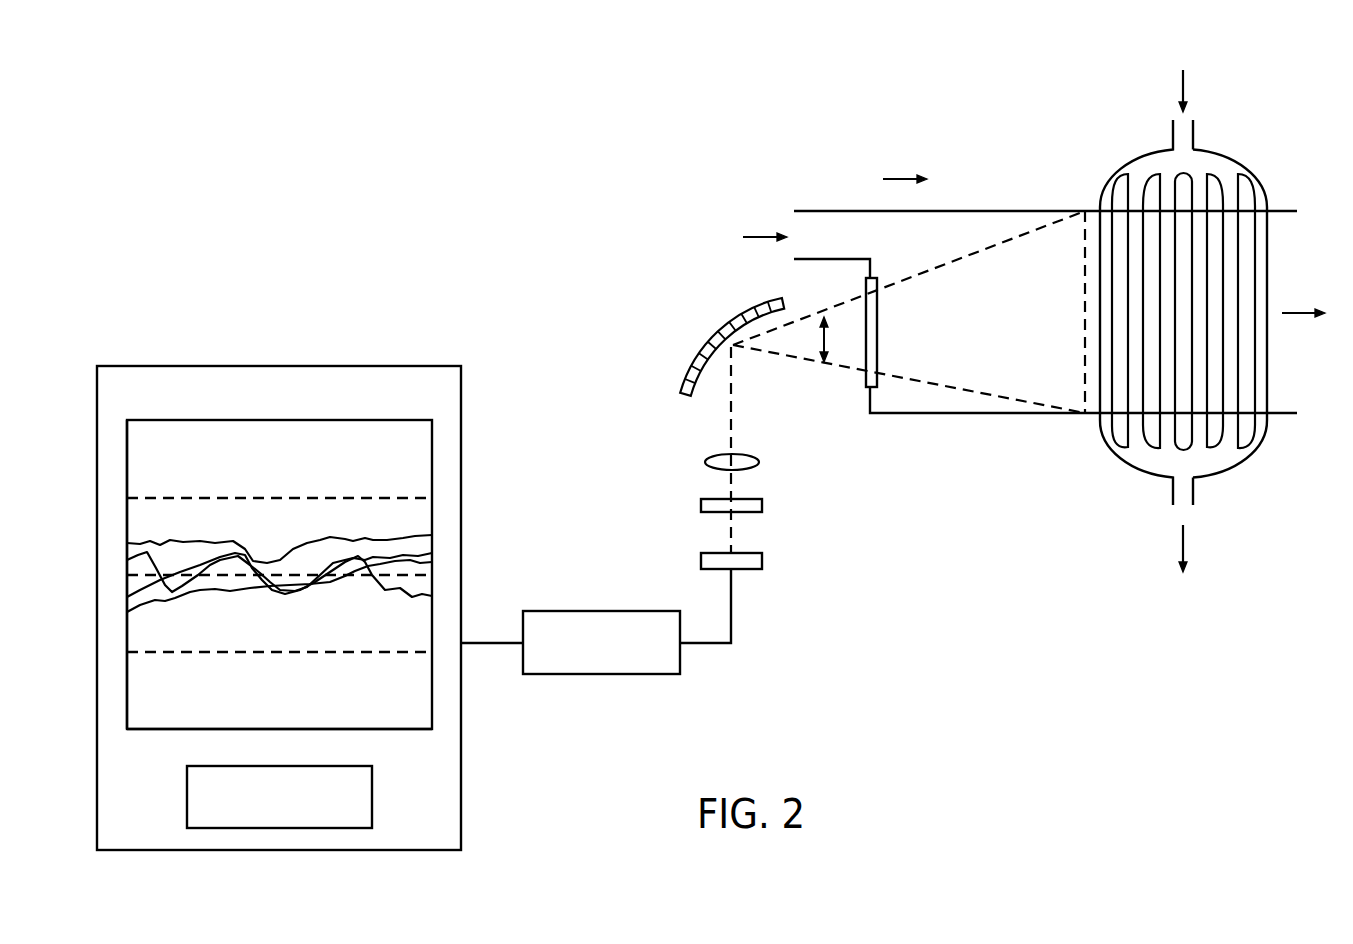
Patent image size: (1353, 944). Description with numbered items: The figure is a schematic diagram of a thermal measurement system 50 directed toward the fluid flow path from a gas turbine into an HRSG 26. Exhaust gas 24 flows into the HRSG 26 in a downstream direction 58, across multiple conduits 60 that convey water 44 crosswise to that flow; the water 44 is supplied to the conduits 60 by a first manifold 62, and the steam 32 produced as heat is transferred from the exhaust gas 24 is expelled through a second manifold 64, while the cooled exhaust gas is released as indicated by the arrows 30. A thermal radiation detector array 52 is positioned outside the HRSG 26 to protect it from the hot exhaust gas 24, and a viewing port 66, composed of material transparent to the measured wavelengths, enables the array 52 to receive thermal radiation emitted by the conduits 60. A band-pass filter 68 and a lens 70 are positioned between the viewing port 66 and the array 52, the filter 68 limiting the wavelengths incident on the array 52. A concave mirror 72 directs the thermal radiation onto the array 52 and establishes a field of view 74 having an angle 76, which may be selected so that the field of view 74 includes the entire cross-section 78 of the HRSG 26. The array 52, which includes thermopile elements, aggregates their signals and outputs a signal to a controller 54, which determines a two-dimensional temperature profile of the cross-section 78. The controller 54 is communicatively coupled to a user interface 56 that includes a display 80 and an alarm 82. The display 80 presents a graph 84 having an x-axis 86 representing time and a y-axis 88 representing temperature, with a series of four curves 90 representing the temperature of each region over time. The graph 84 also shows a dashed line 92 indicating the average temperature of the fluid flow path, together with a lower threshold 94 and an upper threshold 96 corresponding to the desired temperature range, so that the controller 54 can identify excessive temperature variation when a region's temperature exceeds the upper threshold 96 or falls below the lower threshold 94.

The exhaust gas 24 is at (760, 236).
The HRSG 26 is at (857, 211).
The arrows 30 is at (1293, 308).
The steam 32 is at (1185, 540).
The water 44 is at (1185, 80).
The thermal measurement system 50 is at (620, 497).
The thermal radiation detector array 52 is at (748, 553).
The controller 54 is at (600, 674).
The user interface 56 is at (282, 366).
The downstream direction 58 is at (900, 178).
The conduits 60 is at (1238, 292).
The first manifold 62 is at (1247, 166).
The second manifold 64 is at (1247, 458).
The viewing port 66 is at (877, 337).
The filter 68 is at (748, 500).
The lens 70 is at (748, 457).
The mirror 72 is at (713, 340).
The field of view 74 is at (1040, 228).
The angle 76 is at (830, 340).
The cross-section 78 is at (1083, 313).
The display 80 is at (403, 420).
The alarm 82 is at (372, 800).
The graph 84 is at (163, 671).
The x-axis 86 is at (356, 728).
The y-axis 88 is at (128, 440).
The curves 90 is at (284, 536).
The dashed line 92 is at (432, 585).
The lower threshold 94 is at (393, 652).
The upper threshold 96 is at (281, 498).